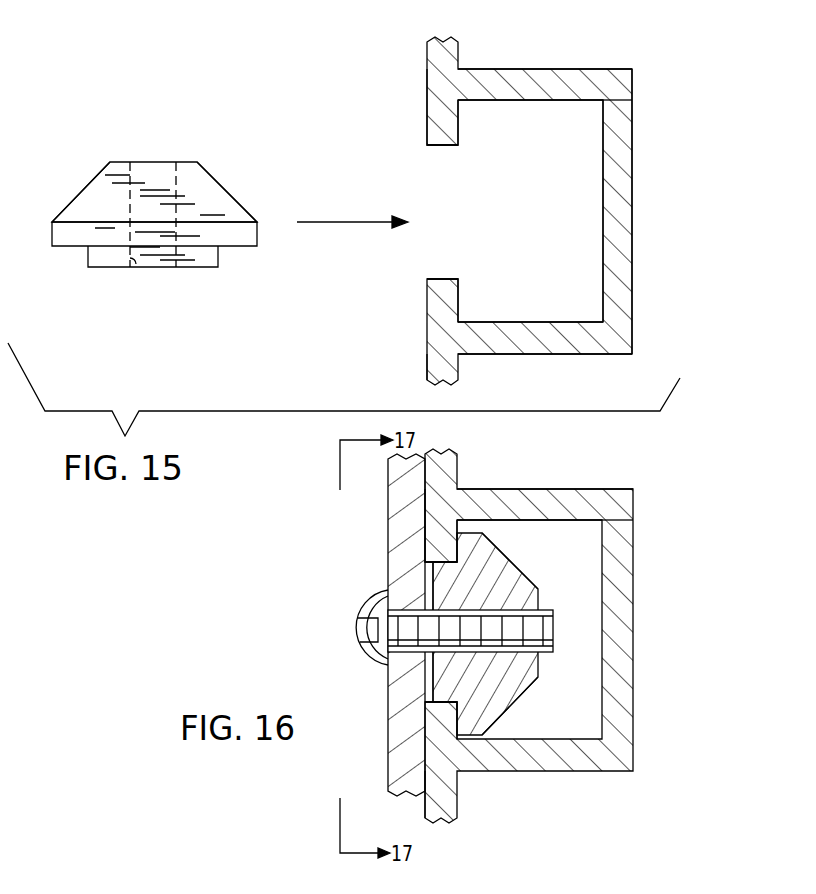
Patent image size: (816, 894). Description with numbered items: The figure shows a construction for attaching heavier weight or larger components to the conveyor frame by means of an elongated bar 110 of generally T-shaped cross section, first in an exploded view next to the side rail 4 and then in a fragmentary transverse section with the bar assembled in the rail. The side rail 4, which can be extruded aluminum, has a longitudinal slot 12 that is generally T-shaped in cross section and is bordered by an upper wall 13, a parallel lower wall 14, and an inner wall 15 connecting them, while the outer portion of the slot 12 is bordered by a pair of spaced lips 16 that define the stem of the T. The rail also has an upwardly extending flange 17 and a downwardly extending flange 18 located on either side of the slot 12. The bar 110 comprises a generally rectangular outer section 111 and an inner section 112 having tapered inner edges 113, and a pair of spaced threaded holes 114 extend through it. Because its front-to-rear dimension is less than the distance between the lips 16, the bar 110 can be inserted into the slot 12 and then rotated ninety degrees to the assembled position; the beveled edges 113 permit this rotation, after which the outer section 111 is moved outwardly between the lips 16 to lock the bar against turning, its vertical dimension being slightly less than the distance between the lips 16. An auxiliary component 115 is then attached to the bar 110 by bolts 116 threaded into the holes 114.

In FIG. 15, the side rail 4 is at (642, 184).
In FIG. 16, the side rail 4 is at (640, 550).
In FIG. 15, the longitudinal slot 12 is at (580, 113).
In FIG. 16, the longitudinal slot 12 is at (586, 527).
In FIG. 15, the upper wall 13 is at (537, 80).
In FIG. 16, the upper wall 13 is at (531, 500).
In FIG. 15, the lower wall 14 is at (547, 340).
In FIG. 15, the inner wall 15 is at (618, 256).
In FIG. 15, the lips 16 is at (450, 148).
In FIG. 16, the lips 16 is at (432, 551).
In FIG. 15, the upwardly extending flange 17 is at (450, 52).
In FIG. 16, the upwardly extending flange 17 is at (448, 476).
In FIG. 15, the downwardly extending flange 18 is at (452, 362).
In FIG. 16, the downwardly extending flange 18 is at (453, 808).
In FIG. 15, the elongated bar 110 is at (197, 156).
In FIG. 16, the elongated bar 110 is at (548, 590).
In FIG. 15, the outer section 111 is at (203, 262).
In FIG. 16, the outer section 111 is at (444, 686).
In FIG. 15, the inner section 112 is at (117, 180).
In FIG. 16, the inner section 112 is at (530, 675).
In FIG. 15, the tapered inner edges 113 is at (83, 188).
In FIG. 16, the tapered inner edges 113 is at (511, 566).
In FIG. 15, the threaded holes 114 is at (137, 270).
In FIG. 16, the auxiliary component 115 is at (397, 509).
In FIG. 16, the bolts 116 is at (363, 612).